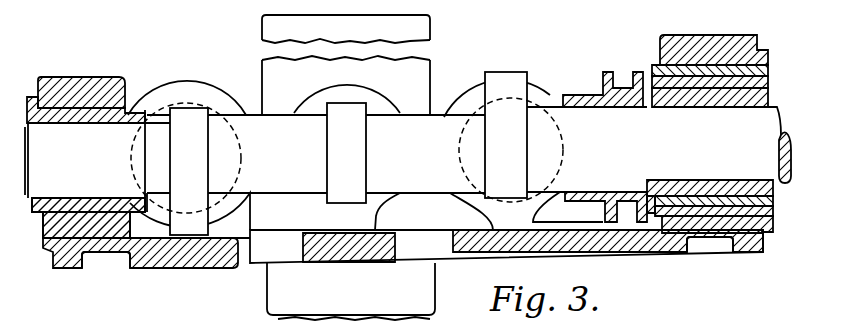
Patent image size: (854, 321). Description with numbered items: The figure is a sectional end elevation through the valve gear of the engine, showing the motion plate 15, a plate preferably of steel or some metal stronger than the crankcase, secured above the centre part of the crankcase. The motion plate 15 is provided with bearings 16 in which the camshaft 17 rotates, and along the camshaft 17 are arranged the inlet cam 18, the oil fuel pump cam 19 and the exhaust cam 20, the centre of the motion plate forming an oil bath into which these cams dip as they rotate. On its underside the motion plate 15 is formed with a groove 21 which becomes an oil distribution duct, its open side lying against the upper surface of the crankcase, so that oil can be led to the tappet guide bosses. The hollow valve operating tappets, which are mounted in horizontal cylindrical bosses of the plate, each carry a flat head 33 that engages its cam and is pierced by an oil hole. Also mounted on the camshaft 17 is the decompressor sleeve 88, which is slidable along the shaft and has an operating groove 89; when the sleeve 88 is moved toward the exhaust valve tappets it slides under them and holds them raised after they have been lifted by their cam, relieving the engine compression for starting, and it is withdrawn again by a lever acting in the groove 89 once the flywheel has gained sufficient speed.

The motion plate 15 is at (221, 270).
The bearings 16 is at (88, 51).
The camshaft 17 is at (233, 115).
The inlet cam 18 is at (194, 106).
The oil fuel pump cam 19 is at (362, 158).
The exhaust cam 20 is at (506, 78).
The groove 21 is at (117, 270).
The flat head 33 is at (161, 112).
The sleeve 88 is at (582, 93).
The operating groove 89 is at (627, 79).